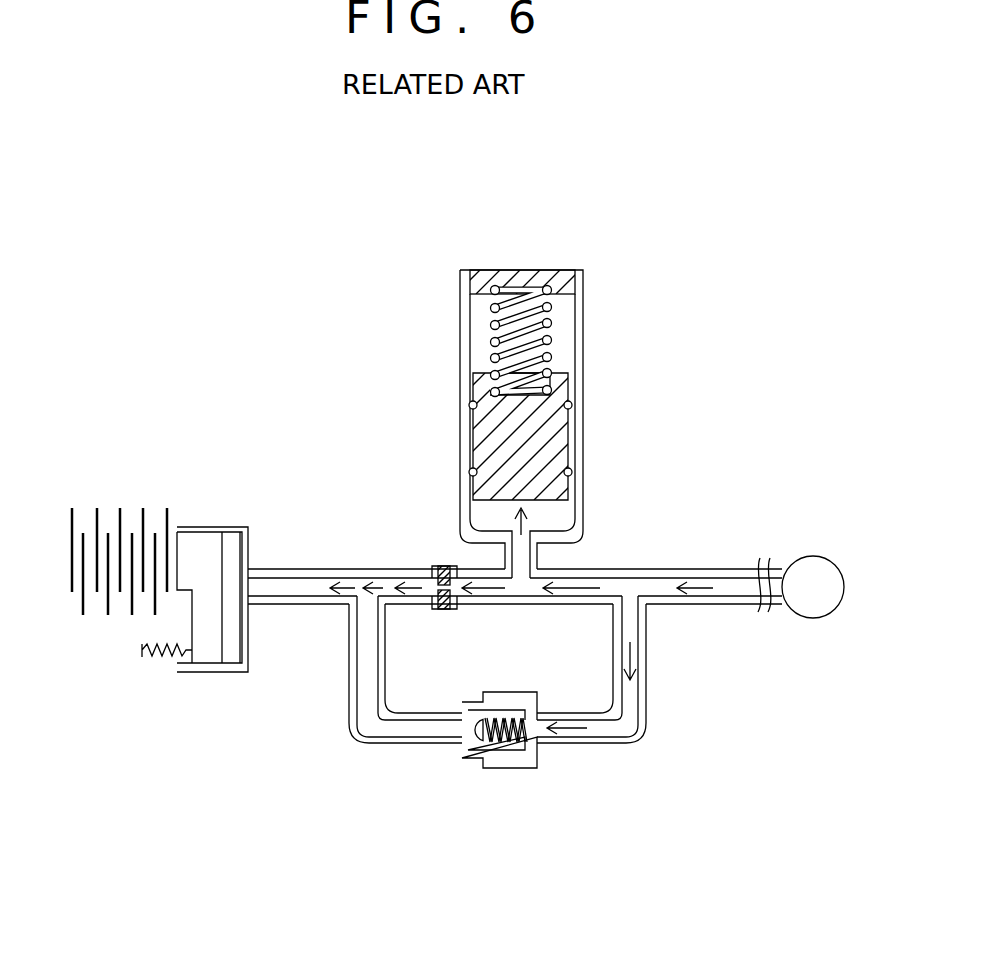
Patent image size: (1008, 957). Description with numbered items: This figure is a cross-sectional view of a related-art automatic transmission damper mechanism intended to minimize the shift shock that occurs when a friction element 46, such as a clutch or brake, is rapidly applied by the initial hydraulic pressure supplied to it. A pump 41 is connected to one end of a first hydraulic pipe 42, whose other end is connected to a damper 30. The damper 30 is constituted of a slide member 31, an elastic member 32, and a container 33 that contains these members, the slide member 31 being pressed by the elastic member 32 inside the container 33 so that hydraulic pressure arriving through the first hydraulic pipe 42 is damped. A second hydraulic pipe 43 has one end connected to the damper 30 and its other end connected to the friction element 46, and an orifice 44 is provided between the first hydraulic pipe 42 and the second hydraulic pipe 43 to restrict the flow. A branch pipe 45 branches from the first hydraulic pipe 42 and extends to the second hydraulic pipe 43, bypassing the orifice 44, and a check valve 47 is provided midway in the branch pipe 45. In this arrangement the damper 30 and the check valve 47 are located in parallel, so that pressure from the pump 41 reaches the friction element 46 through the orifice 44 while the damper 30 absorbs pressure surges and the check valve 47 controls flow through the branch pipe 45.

The damper 30 is at (520, 393).
The slide member 31 is at (568, 377).
The elastic member 32 is at (549, 337).
The container 33 is at (583, 417).
The pump 41 is at (813, 556).
The first hydraulic pipe 42 is at (613, 569).
The second hydraulic pipe 43 is at (298, 569).
The orifice 44 is at (438, 567).
The branch pipe 45 is at (648, 680).
The friction element 46 is at (188, 490).
The check valve 47 is at (500, 768).